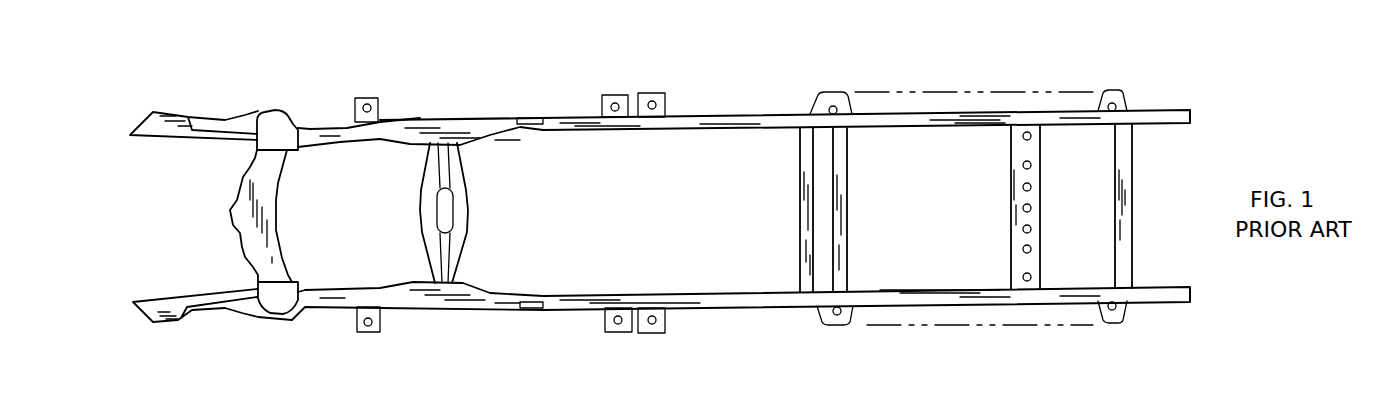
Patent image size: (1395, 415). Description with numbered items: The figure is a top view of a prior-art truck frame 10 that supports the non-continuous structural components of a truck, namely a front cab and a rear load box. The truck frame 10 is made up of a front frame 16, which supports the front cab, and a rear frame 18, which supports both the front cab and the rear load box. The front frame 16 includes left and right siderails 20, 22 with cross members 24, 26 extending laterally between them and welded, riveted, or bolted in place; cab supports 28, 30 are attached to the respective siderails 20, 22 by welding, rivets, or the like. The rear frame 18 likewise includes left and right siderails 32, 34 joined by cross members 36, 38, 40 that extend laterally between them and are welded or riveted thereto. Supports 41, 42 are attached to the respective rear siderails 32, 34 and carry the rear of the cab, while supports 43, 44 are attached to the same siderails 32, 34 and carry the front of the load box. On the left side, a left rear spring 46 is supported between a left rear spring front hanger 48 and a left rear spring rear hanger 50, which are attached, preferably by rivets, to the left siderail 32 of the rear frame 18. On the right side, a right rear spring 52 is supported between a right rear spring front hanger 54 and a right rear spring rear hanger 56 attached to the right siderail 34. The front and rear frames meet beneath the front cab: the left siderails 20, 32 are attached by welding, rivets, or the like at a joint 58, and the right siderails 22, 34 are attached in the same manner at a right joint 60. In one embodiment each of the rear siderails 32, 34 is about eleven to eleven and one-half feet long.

The truck frame 10 is at (647, 223).
The front frame 16 is at (327, 312).
The rear frame 18 is at (926, 331).
The left siderail 20 is at (393, 290).
The right siderail 22 is at (368, 135).
The cross member 24 is at (273, 215).
The cross member 26 is at (463, 213).
The cab support 28 is at (373, 333).
The cab support 30 is at (377, 97).
The left siderail 32 is at (750, 294).
The right siderail 34 is at (718, 127).
The cross member 36 is at (847, 200).
The cross member 38 is at (1042, 202).
The cross member 40 is at (1133, 197).
The support 41 is at (622, 333).
The support 42 is at (617, 95).
The support 43 is at (653, 335).
The support 44 is at (652, 93).
The left rear spring 46 is at (1000, 326).
The left rear spring front hanger 48 is at (835, 327).
The left rear spring rear hanger 50 is at (1125, 318).
The right rear spring 52 is at (995, 90).
The right rear spring front hanger 54 is at (835, 93).
The right rear spring rear hanger 56 is at (1110, 90).
The joint 58 is at (532, 310).
The right joint 60 is at (527, 118).